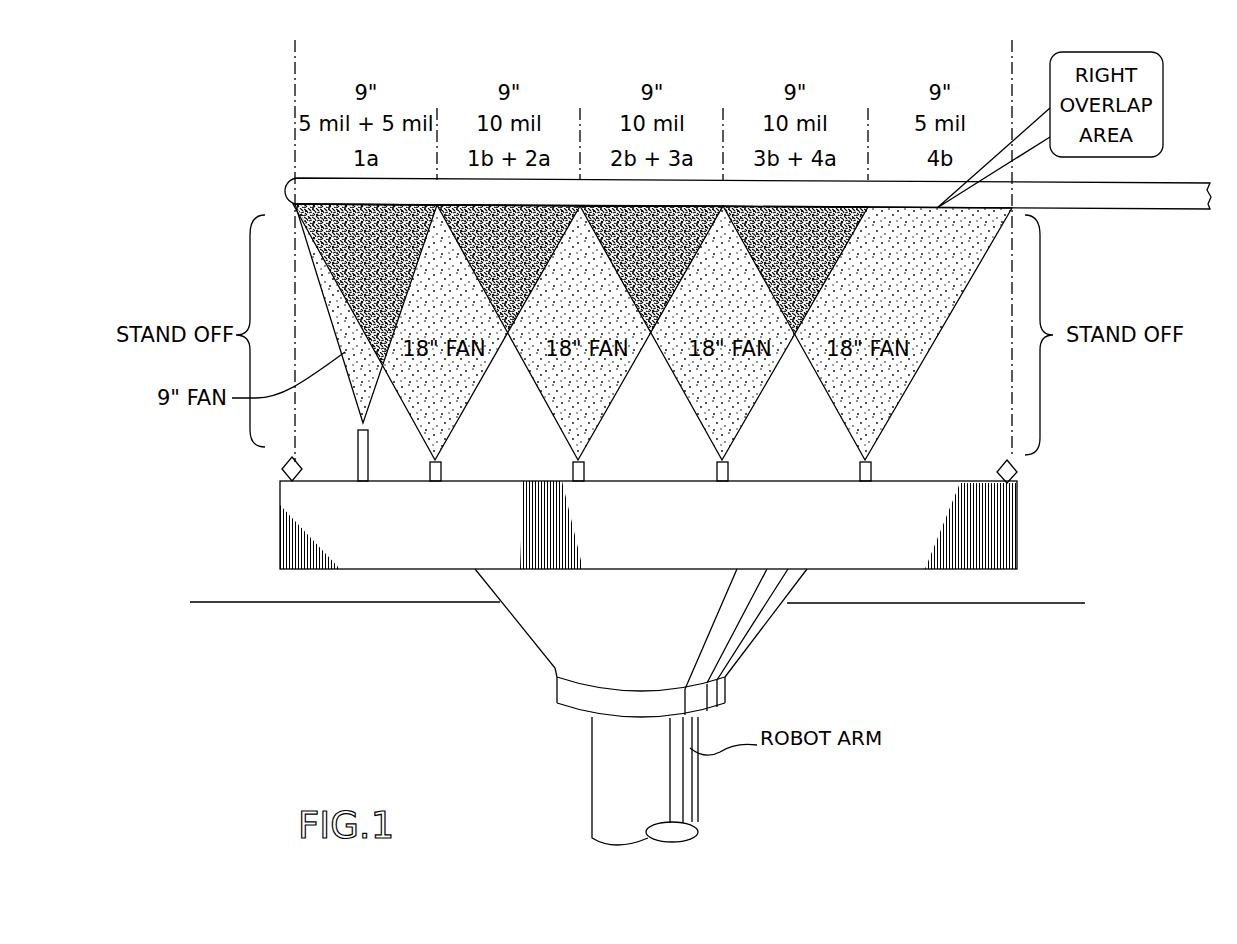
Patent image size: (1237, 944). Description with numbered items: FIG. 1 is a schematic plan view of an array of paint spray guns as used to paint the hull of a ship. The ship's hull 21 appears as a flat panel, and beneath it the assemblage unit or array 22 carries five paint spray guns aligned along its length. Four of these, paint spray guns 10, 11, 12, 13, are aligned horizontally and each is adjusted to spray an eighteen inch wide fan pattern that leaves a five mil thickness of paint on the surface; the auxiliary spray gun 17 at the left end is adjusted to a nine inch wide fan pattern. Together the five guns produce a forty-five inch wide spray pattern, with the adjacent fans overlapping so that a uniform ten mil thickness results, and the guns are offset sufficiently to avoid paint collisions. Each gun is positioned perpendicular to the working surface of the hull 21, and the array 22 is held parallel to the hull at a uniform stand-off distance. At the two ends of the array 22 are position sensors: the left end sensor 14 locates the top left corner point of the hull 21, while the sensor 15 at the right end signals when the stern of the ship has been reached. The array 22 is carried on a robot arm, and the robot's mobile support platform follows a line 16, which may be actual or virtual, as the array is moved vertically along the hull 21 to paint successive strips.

The paint spray gun 10 is at (442, 470).
The paint spray gun 11 is at (586, 470).
The paint spray gun 12 is at (730, 470).
The paint spray gun 13 is at (873, 470).
The left end sensor 14 is at (294, 460).
The sensor 15 is at (1005, 462).
The line 16 is at (1052, 600).
The auxiliary spray gun 17 is at (370, 425).
The ship's hull 21 is at (1165, 182).
The array 22 is at (1050, 498).